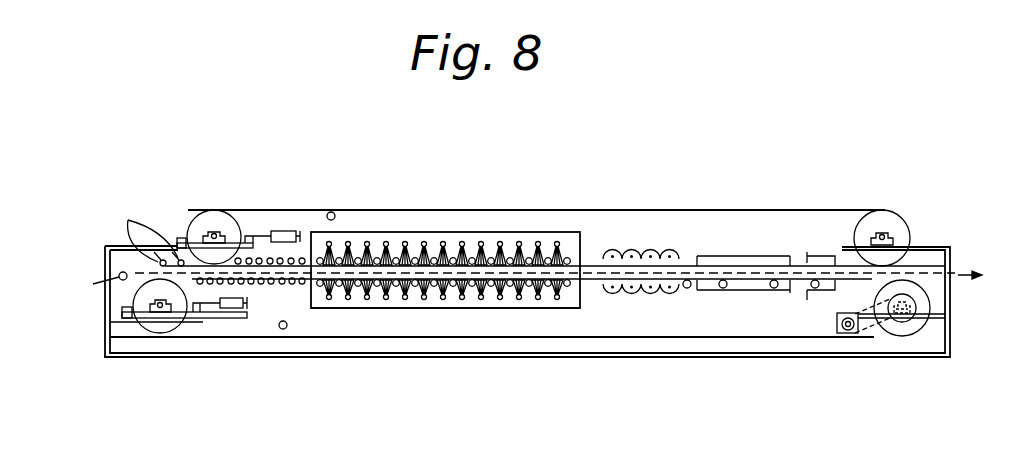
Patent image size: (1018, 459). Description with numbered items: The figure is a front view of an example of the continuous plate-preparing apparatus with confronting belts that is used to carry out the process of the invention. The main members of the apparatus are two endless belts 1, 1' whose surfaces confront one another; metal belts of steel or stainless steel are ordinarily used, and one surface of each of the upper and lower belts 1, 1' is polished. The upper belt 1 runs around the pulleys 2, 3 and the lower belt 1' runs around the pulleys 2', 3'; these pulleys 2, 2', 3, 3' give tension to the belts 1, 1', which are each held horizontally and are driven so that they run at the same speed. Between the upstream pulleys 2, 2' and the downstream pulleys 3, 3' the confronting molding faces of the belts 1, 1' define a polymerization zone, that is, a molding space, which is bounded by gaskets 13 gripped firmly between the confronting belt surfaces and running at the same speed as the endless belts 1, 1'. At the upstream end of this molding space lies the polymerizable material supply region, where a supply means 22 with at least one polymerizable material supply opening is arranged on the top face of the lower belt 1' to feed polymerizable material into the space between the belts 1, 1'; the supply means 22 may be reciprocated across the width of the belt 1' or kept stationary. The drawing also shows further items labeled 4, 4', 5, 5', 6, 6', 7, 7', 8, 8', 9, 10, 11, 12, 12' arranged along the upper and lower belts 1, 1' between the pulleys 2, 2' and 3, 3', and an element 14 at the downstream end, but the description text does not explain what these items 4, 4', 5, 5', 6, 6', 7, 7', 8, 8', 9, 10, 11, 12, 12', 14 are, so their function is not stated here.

The endless belt 1 is at (445, 236).
The endless belt 1' is at (445, 353).
The pulley 2 is at (238, 211).
The pulley 2' is at (178, 339).
The pulley 3 is at (882, 215).
The pulley 3' is at (891, 339).
The upper guide rollers 4 is at (270, 212).
The lower guide rollers 4' is at (251, 338).
The upper brush rollers 5 is at (388, 215).
The lower brush rollers 5' is at (386, 339).
The upper support rollers 6 is at (444, 217).
The lower support rollers 6' is at (444, 339).
The upper brushes 7 is at (509, 215).
The lower brushes 7' is at (509, 339).
The upper squeeze rollers 8 is at (641, 212).
The lower squeeze rollers 8' is at (641, 341).
The heater block 9 is at (737, 257).
The guide member 10 is at (821, 256).
The transport rollers 11 is at (723, 289).
The upper sensor 12 is at (337, 192).
The lower sensor 12' is at (305, 360).
The gasket 13 is at (83, 288).
The outlet direction 14 is at (958, 268).
The supply means 22 is at (148, 226).